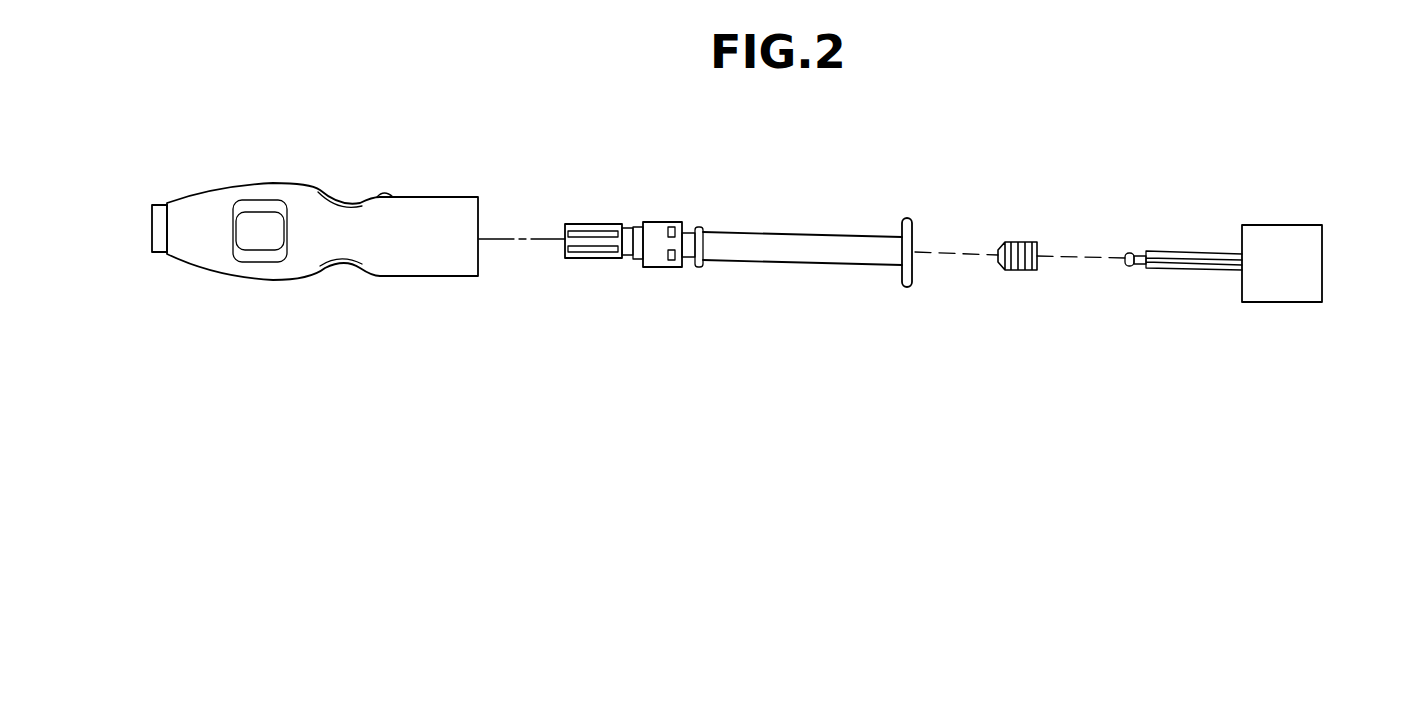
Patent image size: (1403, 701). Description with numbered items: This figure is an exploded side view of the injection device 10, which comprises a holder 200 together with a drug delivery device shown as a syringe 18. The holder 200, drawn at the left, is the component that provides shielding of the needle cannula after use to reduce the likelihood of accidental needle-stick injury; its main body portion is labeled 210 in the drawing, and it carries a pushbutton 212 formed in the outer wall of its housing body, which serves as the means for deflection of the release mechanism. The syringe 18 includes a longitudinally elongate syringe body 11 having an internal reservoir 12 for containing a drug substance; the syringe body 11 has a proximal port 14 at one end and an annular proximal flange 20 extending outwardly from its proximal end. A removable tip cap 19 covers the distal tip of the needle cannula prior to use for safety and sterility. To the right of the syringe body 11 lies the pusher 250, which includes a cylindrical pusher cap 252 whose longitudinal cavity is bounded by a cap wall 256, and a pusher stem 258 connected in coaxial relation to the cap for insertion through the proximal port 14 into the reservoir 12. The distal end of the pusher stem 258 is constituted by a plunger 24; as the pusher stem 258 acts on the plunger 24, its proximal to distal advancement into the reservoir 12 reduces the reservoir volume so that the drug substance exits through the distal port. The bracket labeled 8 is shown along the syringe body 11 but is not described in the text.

The injection device 10 is at (140, 384).
The syringe 18 is at (949, 276).
The syringe 8 is at (778, 232).
The syringe body 11 is at (752, 262).
The internal reservoir 12 is at (862, 250).
The proximal port 14 is at (912, 252).
The tip cap 19 is at (589, 223).
The proximal flange 20 is at (912, 276).
The plunger 24 is at (1005, 243).
The holder 200 is at (300, 302).
The housing 210 is at (232, 187).
The pushbutton 212 is at (386, 192).
The pusher 250 is at (1273, 222).
The pusher cap 252 is at (1344, 316).
The cap wall 256 is at (405, 278).
The pusher stem 258 is at (1195, 272).